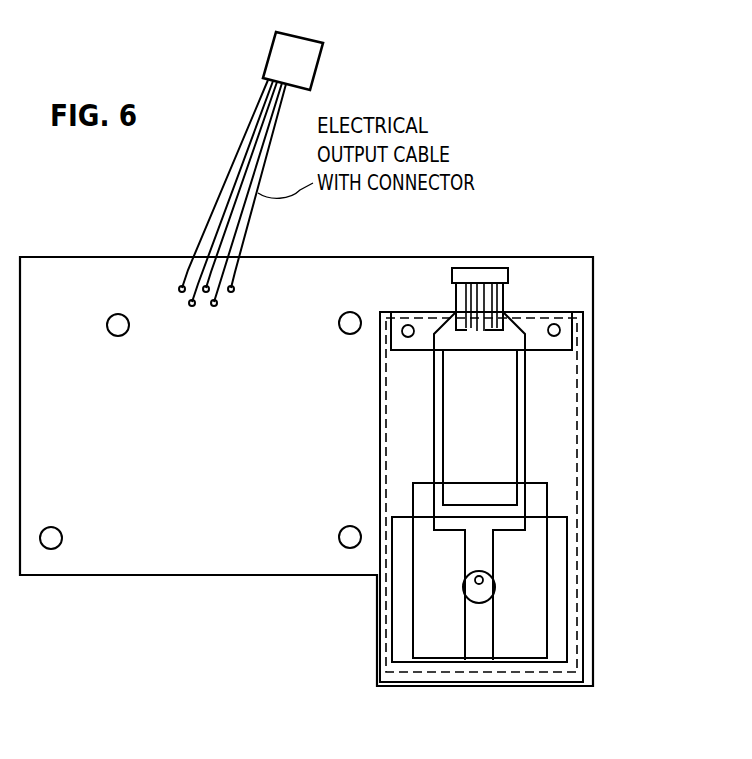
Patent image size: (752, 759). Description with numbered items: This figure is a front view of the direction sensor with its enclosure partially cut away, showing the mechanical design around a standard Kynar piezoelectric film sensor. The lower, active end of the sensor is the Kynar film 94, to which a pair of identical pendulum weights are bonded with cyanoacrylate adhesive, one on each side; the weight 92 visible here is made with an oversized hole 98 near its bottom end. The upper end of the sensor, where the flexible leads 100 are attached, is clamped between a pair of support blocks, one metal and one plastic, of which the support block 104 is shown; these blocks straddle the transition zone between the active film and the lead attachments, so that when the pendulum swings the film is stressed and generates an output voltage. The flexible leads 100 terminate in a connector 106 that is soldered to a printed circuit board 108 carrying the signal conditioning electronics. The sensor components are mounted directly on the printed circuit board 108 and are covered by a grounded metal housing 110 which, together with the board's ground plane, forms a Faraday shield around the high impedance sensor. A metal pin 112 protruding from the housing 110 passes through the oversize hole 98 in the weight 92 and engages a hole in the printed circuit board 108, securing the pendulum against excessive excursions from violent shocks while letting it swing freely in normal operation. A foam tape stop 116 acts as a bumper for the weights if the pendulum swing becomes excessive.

The weight 92 is at (532, 648).
The Kynar film 94 is at (563, 467).
The oversized hole 98 is at (478, 603).
The flexible leads 100 is at (494, 278).
The support block 104 is at (560, 312).
The connector 106 is at (470, 267).
The printed circuit board 108 is at (106, 264).
The grounded metal housing 110 is at (423, 677).
The metal pin 112 is at (483, 580).
The foam tape stop 116 is at (557, 625).